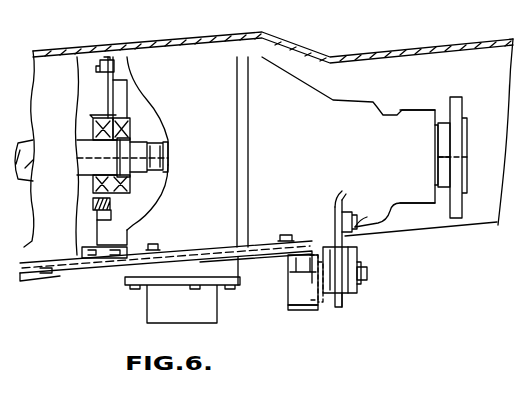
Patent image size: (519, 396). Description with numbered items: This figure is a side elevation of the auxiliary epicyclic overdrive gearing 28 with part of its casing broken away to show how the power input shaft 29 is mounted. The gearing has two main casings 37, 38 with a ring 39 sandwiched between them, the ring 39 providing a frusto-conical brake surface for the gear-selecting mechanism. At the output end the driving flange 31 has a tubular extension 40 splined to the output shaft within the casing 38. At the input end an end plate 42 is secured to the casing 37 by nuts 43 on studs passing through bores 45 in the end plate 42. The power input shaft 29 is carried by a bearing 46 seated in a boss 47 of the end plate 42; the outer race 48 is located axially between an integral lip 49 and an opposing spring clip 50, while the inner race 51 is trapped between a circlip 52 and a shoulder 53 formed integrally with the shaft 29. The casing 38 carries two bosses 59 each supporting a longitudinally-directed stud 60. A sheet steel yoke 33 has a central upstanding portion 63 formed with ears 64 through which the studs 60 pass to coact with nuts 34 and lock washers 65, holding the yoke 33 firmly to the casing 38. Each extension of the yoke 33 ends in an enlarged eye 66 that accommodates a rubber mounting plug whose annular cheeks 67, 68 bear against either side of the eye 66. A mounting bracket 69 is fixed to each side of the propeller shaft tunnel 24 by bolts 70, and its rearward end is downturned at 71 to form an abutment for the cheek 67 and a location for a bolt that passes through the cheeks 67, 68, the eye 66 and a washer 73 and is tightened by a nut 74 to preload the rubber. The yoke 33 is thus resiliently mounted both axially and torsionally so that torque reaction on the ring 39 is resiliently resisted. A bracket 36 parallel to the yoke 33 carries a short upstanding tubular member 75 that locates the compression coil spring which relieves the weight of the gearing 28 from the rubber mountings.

The propeller shaft tunnel 24 is at (310, 45).
The auxiliary epicyclic overdrive gearing 28 is at (116, 287).
The power input shaft 29 is at (86, 143).
The driving flange 31 is at (460, 102).
The yoke 33 is at (338, 312).
The nuts 34 is at (350, 216).
The bracket 36 is at (290, 308).
The casing 37 is at (170, 81).
The casing 38 is at (258, 94).
The ring 39 is at (242, 87).
The tubular extension 40 is at (443, 130).
The end plate 42 is at (104, 65).
The nuts 43 is at (88, 248).
The bores 45 is at (90, 266).
The bearing 46 is at (132, 130).
The boss 47 is at (105, 120).
The outer race 48 is at (128, 200).
The integral lip 49 is at (131, 183).
The spring clip 50 is at (100, 196).
The inner race 51 is at (132, 134).
The circlip 52 is at (132, 179).
The shoulder 53 is at (113, 154).
The bosses 59 is at (333, 202).
The stud 60 is at (357, 226).
The central upstanding portion 63 is at (340, 240).
The ears 64 is at (340, 205).
The lock washers 65 is at (347, 212).
The enlarged eye 66 is at (344, 308).
The annular cheek 67 is at (330, 260).
The annular cheek 68 is at (352, 290).
The mounting bracket 69 is at (37, 275).
The bolts 70 is at (153, 247).
The downturned end 71 is at (309, 300).
The washer 73 is at (358, 280).
The nut 74 is at (368, 274).
The upstanding tubular member 75 is at (300, 297).